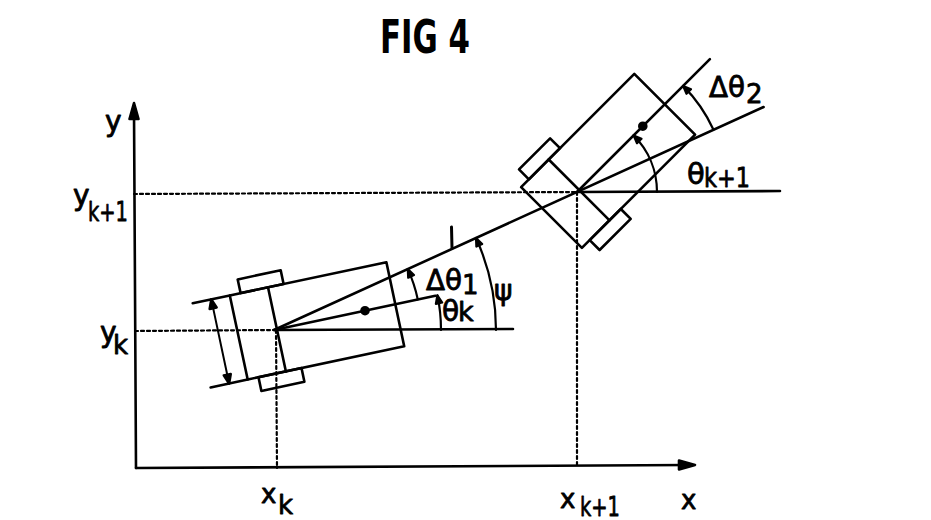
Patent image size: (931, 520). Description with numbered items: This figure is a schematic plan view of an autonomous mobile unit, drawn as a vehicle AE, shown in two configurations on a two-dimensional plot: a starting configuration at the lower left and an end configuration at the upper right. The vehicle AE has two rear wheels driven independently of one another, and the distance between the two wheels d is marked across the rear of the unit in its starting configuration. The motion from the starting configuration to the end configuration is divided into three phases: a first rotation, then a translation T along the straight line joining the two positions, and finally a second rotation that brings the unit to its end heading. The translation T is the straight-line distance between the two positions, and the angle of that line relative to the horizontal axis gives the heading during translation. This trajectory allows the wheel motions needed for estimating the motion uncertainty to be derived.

The vehicle AE is at (347, 343).
The translation T is at (460, 227).
The distance between the two wheels d is at (219, 341).